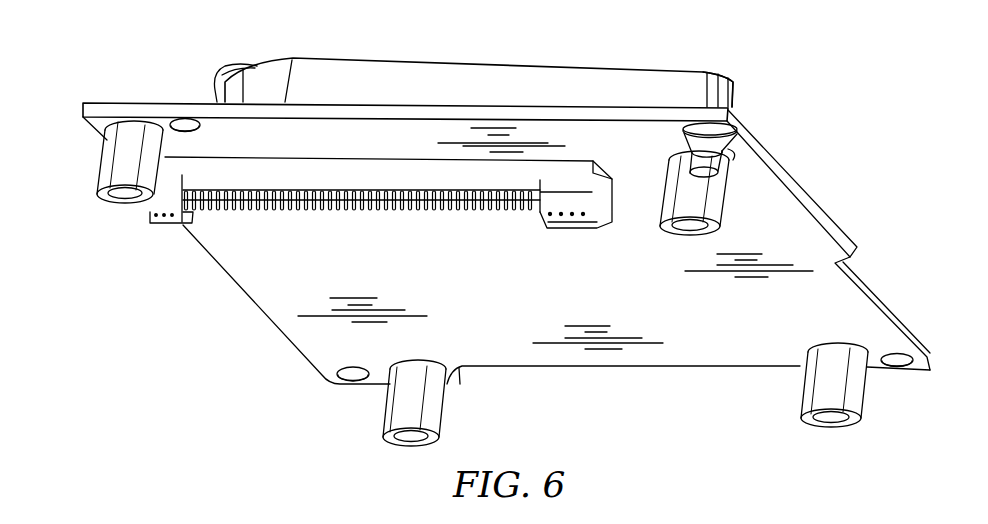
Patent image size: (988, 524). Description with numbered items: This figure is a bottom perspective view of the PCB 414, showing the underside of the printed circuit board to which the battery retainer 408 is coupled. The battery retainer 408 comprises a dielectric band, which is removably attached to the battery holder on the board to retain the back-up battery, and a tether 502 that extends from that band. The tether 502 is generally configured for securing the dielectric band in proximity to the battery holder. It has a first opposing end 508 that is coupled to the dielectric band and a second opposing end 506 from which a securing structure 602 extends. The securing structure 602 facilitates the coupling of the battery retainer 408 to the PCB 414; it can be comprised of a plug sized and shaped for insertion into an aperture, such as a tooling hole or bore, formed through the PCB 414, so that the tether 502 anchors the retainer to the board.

The battery retainer 408 is at (266, 51).
The PCB 414 is at (136, 96).
The tether 502 is at (590, 60).
The second opposing end 506 is at (737, 66).
The first opposing end 508 is at (437, 61).
The securing structure 602 is at (745, 136).